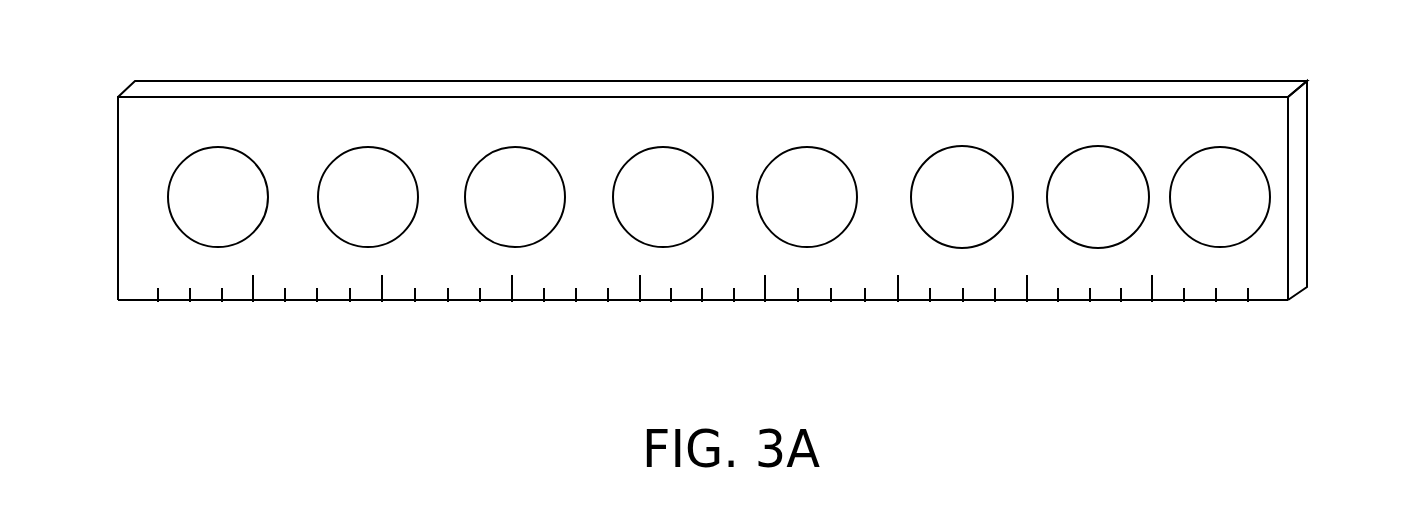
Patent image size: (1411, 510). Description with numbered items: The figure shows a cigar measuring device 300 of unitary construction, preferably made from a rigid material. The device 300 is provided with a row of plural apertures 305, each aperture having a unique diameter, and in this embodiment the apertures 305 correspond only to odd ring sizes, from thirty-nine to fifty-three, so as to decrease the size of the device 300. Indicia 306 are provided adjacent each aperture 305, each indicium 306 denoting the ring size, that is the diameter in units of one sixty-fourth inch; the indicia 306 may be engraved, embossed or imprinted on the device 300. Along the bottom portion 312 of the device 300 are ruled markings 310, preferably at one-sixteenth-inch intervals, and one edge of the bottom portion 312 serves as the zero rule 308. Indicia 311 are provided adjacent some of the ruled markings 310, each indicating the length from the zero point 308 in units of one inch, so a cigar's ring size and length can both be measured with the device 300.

The cigar measuring device 300 is at (1282, 173).
The apertures 305 is at (935, 193).
The indicia 306 is at (637, 126).
The zero rule 308 is at (1287, 300).
The ruled markings 310 is at (805, 302).
The indicia 311 is at (397, 265).
The bottom portion 312 is at (1167, 300).